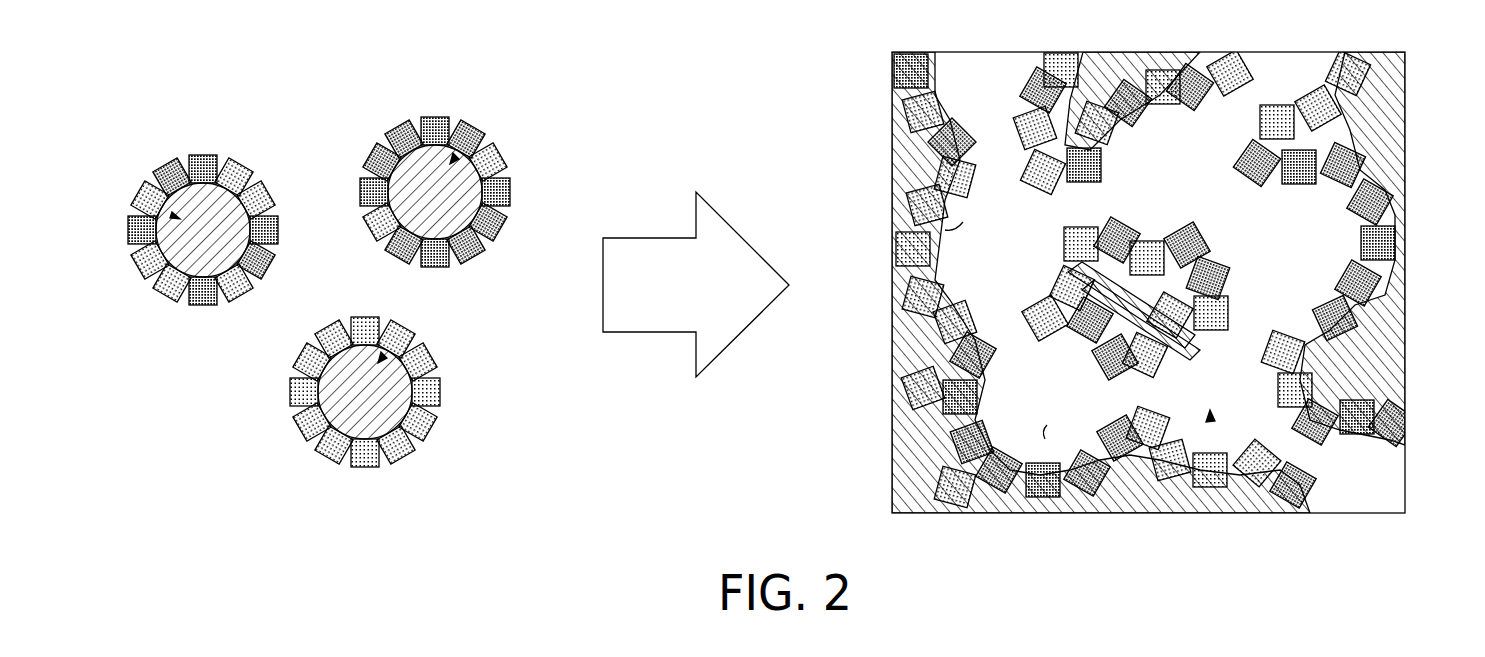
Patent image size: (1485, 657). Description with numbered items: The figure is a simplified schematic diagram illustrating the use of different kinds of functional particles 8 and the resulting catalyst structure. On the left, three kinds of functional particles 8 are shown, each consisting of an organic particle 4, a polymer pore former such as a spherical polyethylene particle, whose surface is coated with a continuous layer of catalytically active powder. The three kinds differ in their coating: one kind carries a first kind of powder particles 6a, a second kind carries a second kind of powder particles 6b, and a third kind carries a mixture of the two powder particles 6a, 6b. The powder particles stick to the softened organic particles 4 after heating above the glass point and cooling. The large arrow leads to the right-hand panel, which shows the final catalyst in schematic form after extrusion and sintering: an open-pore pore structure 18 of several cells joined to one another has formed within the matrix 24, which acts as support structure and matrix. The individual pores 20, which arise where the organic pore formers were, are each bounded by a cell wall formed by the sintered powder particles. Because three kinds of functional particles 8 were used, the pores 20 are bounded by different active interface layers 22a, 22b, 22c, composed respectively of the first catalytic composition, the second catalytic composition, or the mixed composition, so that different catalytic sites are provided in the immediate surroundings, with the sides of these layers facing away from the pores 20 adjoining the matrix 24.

The organic particles 4 is at (145, 275).
The first kind of powder particles 6a is at (268, 188).
The second kind of powder particles 6b is at (200, 310).
The functional particles 8 is at (174, 215).
The pore structure 18 is at (1212, 418).
The pores 20 is at (963, 222).
The first active interface layer 22a is at (1343, 243).
The second active interface layer 22b is at (940, 247).
The third active interface layer 22c is at (1115, 135).
The matrix 24 is at (1388, 356).